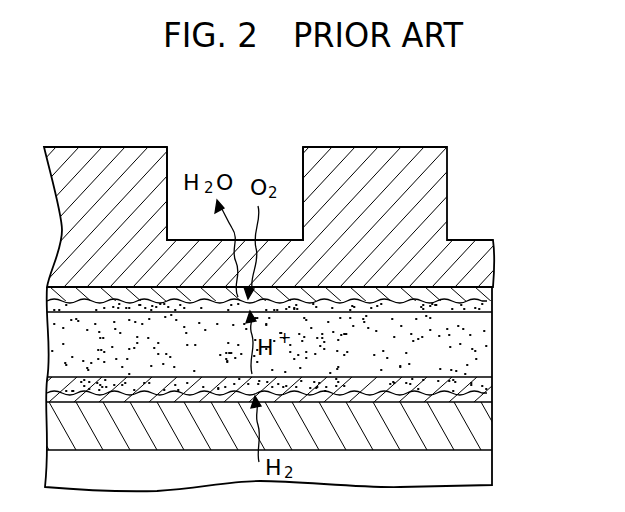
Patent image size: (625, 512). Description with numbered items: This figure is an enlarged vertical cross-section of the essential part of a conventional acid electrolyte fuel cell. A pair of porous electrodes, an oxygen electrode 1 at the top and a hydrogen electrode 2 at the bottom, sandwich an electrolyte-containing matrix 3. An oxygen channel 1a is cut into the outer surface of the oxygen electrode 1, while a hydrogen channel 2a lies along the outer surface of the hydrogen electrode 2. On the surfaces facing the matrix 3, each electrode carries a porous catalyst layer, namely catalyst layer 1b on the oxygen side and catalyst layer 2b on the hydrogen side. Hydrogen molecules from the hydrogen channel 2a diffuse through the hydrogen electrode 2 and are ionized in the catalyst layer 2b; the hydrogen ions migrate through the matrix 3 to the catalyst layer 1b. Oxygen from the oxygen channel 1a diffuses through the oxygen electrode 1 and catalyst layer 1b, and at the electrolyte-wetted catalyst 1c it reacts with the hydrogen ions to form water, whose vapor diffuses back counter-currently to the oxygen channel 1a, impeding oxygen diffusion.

The oxygen electrode 1 is at (438, 182).
The oxygen channel 1a is at (287, 163).
The catalyst layer 1b is at (493, 290).
The catalyst 1c is at (486, 305).
The electrolyte-containing matrix 3 is at (489, 350).
The catalyst layer 2b is at (486, 395).
The hydrogen electrode 2 is at (478, 434).
The hydrogen channel 2a is at (486, 470).